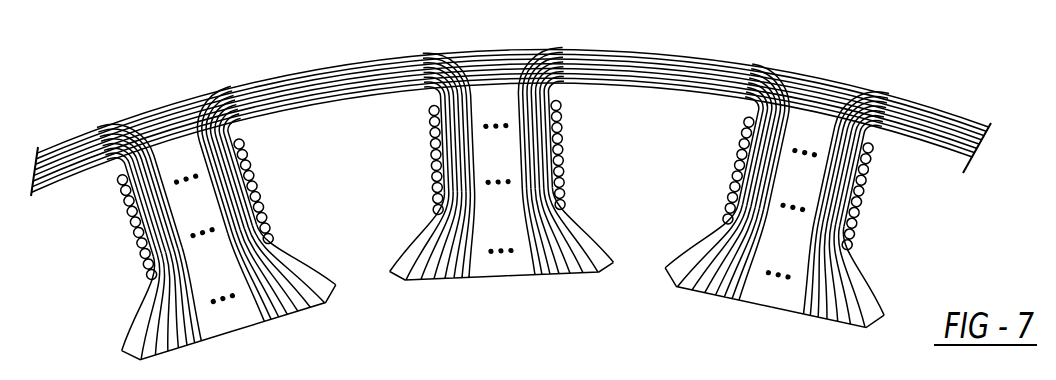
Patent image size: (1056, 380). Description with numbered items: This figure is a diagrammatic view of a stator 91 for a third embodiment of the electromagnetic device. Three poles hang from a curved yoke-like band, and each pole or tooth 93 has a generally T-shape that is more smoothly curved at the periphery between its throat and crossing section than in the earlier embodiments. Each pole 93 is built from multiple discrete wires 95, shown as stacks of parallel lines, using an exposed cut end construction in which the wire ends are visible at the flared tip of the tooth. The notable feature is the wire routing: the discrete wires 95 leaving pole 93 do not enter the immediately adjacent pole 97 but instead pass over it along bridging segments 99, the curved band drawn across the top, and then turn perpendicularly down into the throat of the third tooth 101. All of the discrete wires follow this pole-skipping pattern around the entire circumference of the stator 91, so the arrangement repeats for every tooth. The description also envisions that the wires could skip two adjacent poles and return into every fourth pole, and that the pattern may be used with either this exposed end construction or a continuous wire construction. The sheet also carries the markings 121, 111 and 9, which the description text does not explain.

The stator 91 is at (534, 204).
The pole or tooth 93 is at (217, 213).
The discrete wires 95 is at (289, 292).
The immediately adjacent pole 97 is at (557, 246).
The bridging segments 99 is at (307, 77).
The third tooth 101 is at (731, 261).
The slot 121 is at (404, 379).
The winding 111 is at (672, 368).
The section line 9 is at (502, 367).